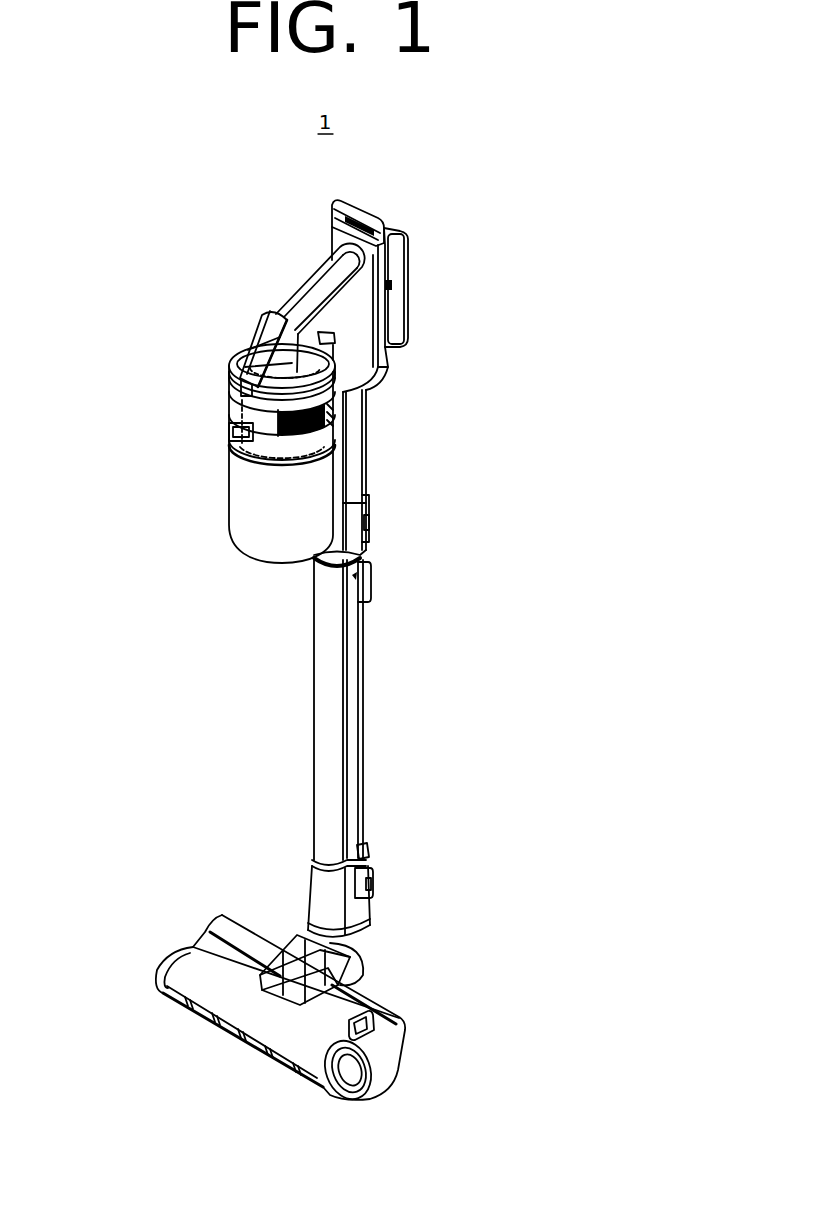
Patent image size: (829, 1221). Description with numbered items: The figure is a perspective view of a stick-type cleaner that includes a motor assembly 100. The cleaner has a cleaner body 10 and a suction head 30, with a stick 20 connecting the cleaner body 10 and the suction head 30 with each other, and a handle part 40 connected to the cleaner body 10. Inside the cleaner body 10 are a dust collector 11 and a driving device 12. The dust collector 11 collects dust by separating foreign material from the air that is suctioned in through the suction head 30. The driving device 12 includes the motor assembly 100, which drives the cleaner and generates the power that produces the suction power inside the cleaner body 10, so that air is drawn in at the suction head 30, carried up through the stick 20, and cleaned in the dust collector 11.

The cleaner body 10 is at (235, 437).
The dust collector 11 is at (231, 513).
The driving device 12 is at (230, 383).
The motor assembly 100 is at (228, 418).
The stick 20 is at (314, 719).
The suction head 30 is at (158, 957).
The handle part 40 is at (308, 300).